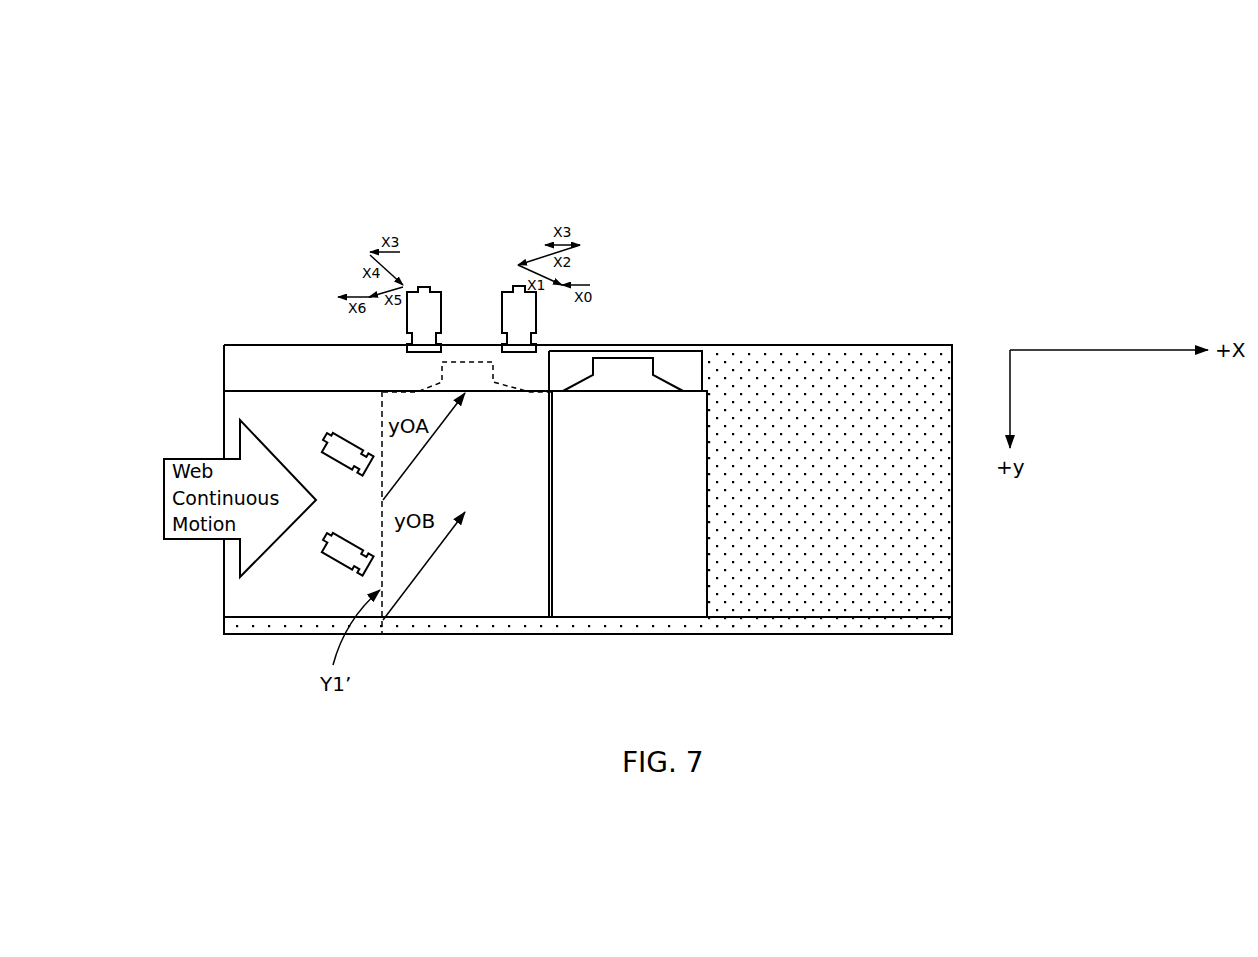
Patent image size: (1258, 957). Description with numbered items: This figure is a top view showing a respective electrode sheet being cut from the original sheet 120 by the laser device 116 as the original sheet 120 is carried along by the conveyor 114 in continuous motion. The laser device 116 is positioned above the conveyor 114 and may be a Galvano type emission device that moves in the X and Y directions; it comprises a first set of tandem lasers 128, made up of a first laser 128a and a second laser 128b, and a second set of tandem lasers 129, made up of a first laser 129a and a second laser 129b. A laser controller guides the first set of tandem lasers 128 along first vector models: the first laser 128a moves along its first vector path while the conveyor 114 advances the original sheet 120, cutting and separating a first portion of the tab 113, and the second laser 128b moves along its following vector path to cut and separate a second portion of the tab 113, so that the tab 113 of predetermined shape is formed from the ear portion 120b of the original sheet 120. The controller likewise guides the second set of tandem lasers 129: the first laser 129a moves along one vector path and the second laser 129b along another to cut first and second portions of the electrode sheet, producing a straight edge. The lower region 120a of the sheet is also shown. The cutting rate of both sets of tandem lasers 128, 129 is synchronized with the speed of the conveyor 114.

The laser device 116 is at (217, 104).
The original sheet 120 is at (155, 242).
The lower housing portion 120a is at (258, 592).
The ear portion 120b is at (258, 366).
The first set of tandem lasers 128 is at (415, 247).
The first laser 128a is at (507, 286).
The second laser 128b is at (417, 287).
The tab 113 is at (467, 370).
The conveyor 114 is at (928, 365).
The second set of tandem lasers 129 is at (246, 563).
The first laser 129a is at (345, 440).
The second laser 129b is at (335, 557).